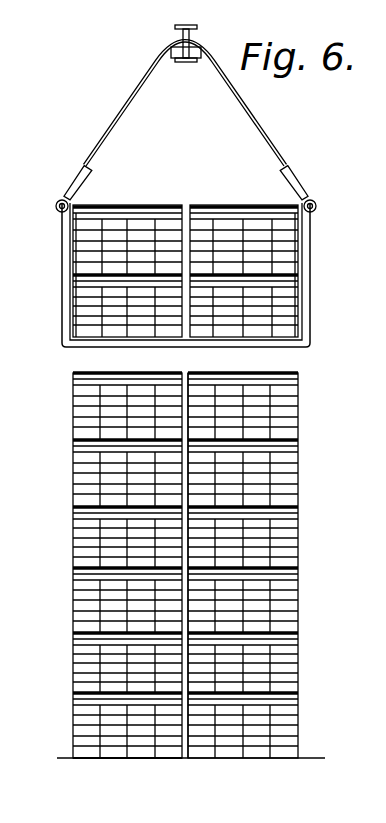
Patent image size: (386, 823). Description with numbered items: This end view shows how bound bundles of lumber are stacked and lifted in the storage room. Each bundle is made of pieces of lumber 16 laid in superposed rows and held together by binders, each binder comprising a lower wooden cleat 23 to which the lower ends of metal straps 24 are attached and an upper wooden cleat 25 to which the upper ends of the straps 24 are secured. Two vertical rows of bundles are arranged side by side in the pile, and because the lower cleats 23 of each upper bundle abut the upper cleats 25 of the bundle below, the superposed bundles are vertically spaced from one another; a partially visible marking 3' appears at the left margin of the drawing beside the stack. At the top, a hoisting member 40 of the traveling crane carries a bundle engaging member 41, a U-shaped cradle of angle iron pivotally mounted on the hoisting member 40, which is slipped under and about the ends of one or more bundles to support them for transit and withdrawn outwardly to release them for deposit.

The hoisting member 40 is at (176, 35).
The bundle engaging member 41 is at (67, 258).
The pieces of lumber 16 is at (108, 581).
The upper cleat 25 is at (74, 697).
The metal strap 24 is at (74, 738).
The lower cleat 23 is at (106, 758).
The tray section 3' is at (94, 565).